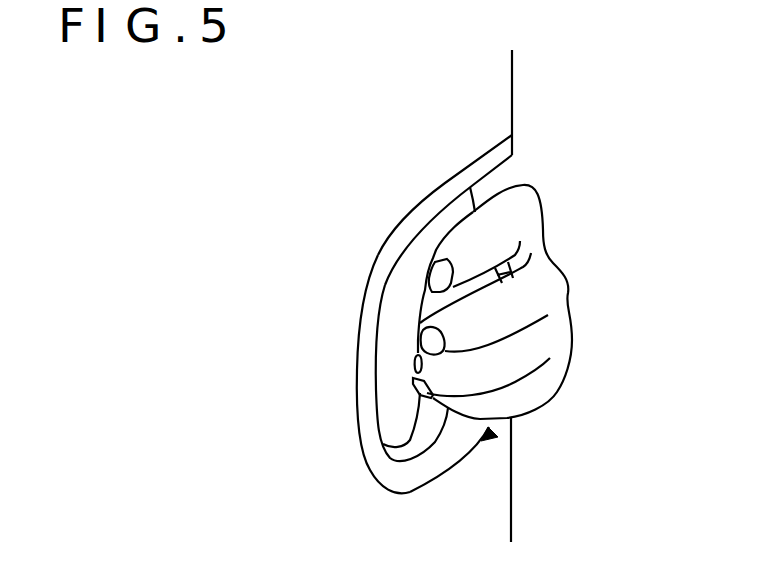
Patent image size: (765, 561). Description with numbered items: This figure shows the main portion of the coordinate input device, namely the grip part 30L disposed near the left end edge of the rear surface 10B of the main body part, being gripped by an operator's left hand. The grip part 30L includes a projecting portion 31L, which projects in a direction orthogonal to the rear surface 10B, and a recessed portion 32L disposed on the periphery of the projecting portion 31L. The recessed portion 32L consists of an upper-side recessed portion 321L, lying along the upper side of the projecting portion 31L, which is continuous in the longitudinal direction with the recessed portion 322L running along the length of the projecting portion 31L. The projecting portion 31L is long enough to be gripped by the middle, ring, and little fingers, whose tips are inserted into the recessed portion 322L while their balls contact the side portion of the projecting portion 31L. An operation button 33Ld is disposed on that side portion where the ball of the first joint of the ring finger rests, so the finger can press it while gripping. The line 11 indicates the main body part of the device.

The rear surface 10B is at (502, 102).
The recessed portion 32L is at (345, 314).
The upper-side recessed portion 321L is at (448, 218).
The recessed portion 322L is at (357, 374).
The operation button 33Ld is at (505, 262).
The grip part 30L is at (490, 428).
The projecting portion 31L is at (472, 443).
The center line 11 is at (488, 505).